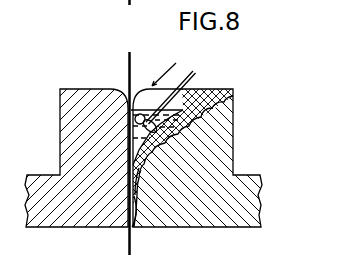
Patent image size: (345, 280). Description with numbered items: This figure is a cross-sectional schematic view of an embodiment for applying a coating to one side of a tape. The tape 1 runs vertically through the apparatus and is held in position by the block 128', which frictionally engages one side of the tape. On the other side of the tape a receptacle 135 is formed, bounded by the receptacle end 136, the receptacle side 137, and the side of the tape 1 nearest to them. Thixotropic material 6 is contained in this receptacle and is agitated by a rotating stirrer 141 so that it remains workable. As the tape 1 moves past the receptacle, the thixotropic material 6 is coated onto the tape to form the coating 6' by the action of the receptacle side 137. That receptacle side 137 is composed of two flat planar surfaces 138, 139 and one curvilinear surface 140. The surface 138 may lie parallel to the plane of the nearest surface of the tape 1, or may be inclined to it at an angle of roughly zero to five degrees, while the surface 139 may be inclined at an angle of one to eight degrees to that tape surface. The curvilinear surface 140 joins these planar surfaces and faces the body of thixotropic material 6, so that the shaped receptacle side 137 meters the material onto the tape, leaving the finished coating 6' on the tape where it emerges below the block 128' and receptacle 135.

The tape 1 is at (128, 72).
The thixotropic material 6 is at (157, 98).
The coating 6' is at (144, 245).
The block 128' is at (75, 158).
The receptacle 135 is at (182, 65).
The receptacle end 136 is at (203, 94).
The receptacle side 137 is at (228, 112).
The flat planar surface 138 is at (136, 205).
The flat planar surface 139 is at (139, 178).
The curvilinear surface 140 is at (197, 161).
The rotating stirrer 141 is at (195, 72).